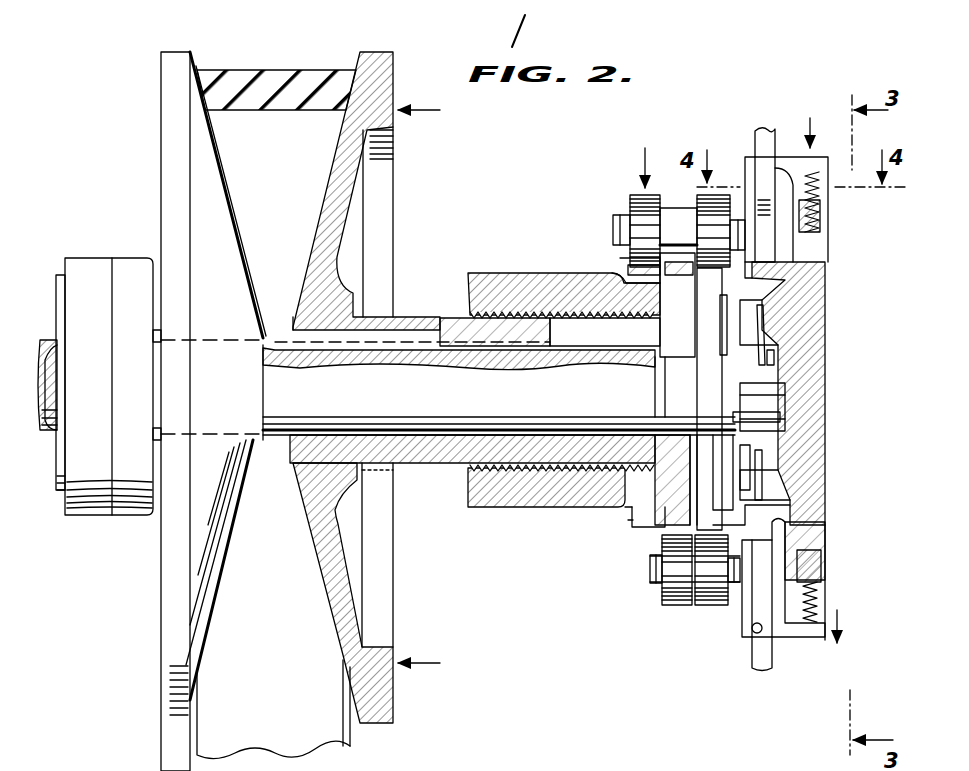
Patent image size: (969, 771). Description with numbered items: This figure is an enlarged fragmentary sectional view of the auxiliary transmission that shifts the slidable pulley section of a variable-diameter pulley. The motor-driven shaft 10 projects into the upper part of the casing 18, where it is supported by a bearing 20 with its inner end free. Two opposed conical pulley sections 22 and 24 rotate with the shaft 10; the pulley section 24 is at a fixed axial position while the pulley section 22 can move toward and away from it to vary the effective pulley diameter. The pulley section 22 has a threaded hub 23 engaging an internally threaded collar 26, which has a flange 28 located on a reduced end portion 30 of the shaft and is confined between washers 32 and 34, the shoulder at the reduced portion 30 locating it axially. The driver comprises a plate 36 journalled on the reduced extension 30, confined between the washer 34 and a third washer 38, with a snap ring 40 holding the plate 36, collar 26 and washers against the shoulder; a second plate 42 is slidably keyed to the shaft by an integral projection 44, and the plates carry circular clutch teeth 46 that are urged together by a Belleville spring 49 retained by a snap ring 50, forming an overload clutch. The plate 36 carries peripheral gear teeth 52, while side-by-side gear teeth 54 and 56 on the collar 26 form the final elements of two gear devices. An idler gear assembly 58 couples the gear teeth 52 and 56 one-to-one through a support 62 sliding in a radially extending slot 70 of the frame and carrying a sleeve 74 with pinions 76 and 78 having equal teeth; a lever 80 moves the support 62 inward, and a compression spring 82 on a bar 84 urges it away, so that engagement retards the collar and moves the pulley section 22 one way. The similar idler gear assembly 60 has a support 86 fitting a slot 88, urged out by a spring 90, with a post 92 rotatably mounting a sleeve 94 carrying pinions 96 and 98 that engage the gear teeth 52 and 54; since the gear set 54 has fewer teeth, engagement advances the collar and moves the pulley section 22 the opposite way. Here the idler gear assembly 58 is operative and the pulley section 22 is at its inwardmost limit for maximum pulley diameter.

The shaft 10 is at (499, 402).
The casing 18 is at (785, 272).
The bearing 20 is at (90, 270).
The pulley section 22 is at (333, 212).
The threaded hub 23 is at (418, 452).
The pulley section 24 is at (161, 153).
The collar 26 is at (486, 498).
The flange 28 is at (672, 443).
The reduced end portion 30 is at (655, 385).
The washer 32 is at (655, 336).
The washer 34 is at (697, 340).
The plate 36 is at (708, 445).
The washer 38 is at (735, 448).
The snap ring 40 is at (740, 420).
The plate 42 is at (750, 476).
The integral projection 44 is at (745, 388).
The clutch teeth 46 is at (727, 305).
The Belleville spring 49 is at (763, 320).
The snap ring 50 is at (772, 352).
The gear teeth 52 is at (715, 515).
The gear teeth 54 is at (620, 272).
The gear teeth 56 is at (630, 527).
The idler gear assembly 58 is at (632, 183).
The idler gear assembly 60 is at (652, 606).
The support 62 is at (789, 150).
The radially extending slot 70 is at (753, 152).
The sleeve 74 is at (673, 215).
The pinion 76 is at (630, 196).
The pinion 78 is at (718, 202).
The lever 80 is at (815, 158).
The compression spring 82 is at (828, 195).
The bar 84 is at (815, 522).
The support 86 is at (791, 651).
The slot 88 is at (754, 630).
The spring 90 is at (822, 605).
The post 92 is at (741, 585).
The sleeve 94 is at (685, 565).
The pinion 96 is at (672, 585).
The pinion 98 is at (700, 606).